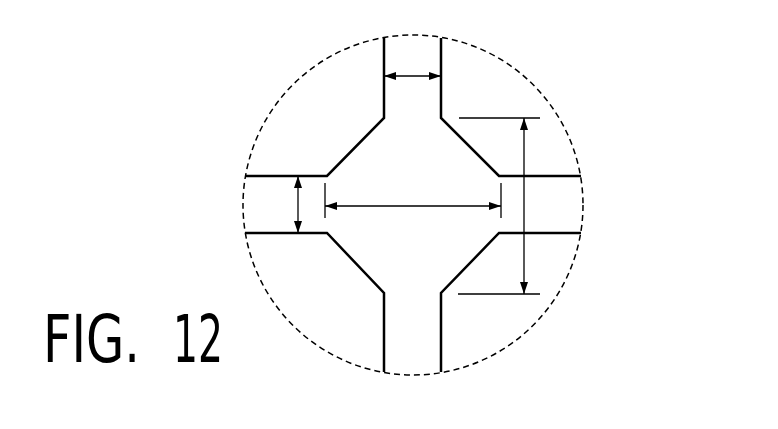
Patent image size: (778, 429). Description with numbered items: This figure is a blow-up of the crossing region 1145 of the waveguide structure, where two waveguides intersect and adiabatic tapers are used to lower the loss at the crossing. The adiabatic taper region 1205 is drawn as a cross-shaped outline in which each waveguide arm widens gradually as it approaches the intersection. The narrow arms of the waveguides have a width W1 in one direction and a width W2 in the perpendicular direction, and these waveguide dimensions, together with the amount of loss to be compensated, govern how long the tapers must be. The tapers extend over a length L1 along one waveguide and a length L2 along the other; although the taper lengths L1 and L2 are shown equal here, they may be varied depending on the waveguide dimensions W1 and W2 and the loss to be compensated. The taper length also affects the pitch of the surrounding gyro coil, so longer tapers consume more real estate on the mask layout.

The crossing region 1145 is at (500, 42).
The adiabatic taper region 1205 is at (360, 157).
The waveguide dimension W1 is at (279, 204).
The waveguide dimension W2 is at (412, 95).
The taper length L1 is at (413, 214).
The taper length L2 is at (508, 206).